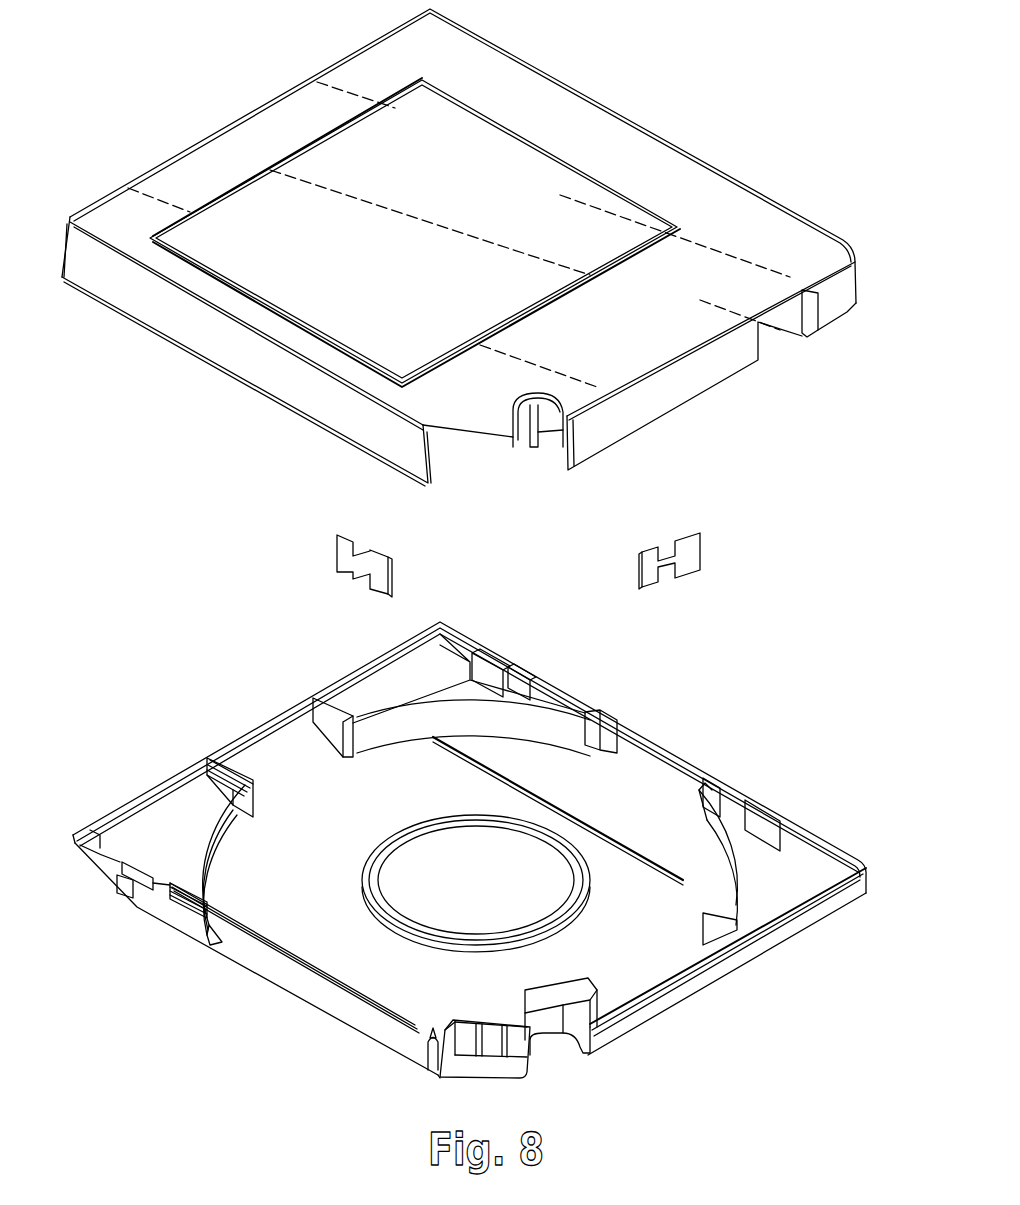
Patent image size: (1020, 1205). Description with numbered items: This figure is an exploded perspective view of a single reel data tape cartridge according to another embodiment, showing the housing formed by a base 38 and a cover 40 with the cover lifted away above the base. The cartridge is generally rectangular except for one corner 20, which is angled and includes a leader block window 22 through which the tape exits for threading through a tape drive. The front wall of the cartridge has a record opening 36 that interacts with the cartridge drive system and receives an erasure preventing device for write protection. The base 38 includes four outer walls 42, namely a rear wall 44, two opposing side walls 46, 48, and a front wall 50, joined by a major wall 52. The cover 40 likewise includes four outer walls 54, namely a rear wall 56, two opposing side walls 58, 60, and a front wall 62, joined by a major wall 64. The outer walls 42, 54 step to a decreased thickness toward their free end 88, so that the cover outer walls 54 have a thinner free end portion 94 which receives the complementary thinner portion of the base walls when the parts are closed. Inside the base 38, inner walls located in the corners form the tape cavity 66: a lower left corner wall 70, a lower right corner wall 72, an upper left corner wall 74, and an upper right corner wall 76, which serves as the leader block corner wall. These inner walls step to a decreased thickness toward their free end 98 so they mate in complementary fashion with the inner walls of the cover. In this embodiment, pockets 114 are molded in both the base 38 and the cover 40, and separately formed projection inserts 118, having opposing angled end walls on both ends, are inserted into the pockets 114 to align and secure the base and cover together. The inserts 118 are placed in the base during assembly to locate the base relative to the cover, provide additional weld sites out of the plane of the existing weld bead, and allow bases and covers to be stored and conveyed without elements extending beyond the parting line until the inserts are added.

The corner 20 is at (482, 1072).
The leader block window 22 is at (482, 437).
The record opening 36 is at (768, 337).
The base 38 is at (660, 732).
The cover 40 is at (238, 118).
The outer walls 42 is at (376, 1034).
The rear wall 44 is at (253, 724).
The side wall 46 is at (255, 953).
The side wall 48 is at (770, 802).
The front wall 50 is at (755, 952).
The major wall 52 is at (353, 944).
The outer walls 54 is at (235, 357).
The rear wall 56 is at (162, 163).
The side wall 58 is at (365, 427).
The side wall 60 is at (703, 160).
The front wall 62 is at (733, 357).
The major wall 64 is at (362, 65).
The tape cavity 66 is at (310, 800).
The lower left corner wall 70 is at (531, 732).
The lower right corner wall 72 is at (240, 826).
The upper left corner wall 74 is at (718, 832).
The upper right corner wall 76 is at (558, 988).
The free end 88 is at (858, 852).
The free end portion 94 is at (135, 322).
The free end 98 is at (235, 897).
The pockets 114 is at (580, 702).
The projection inserts 118 is at (378, 578).